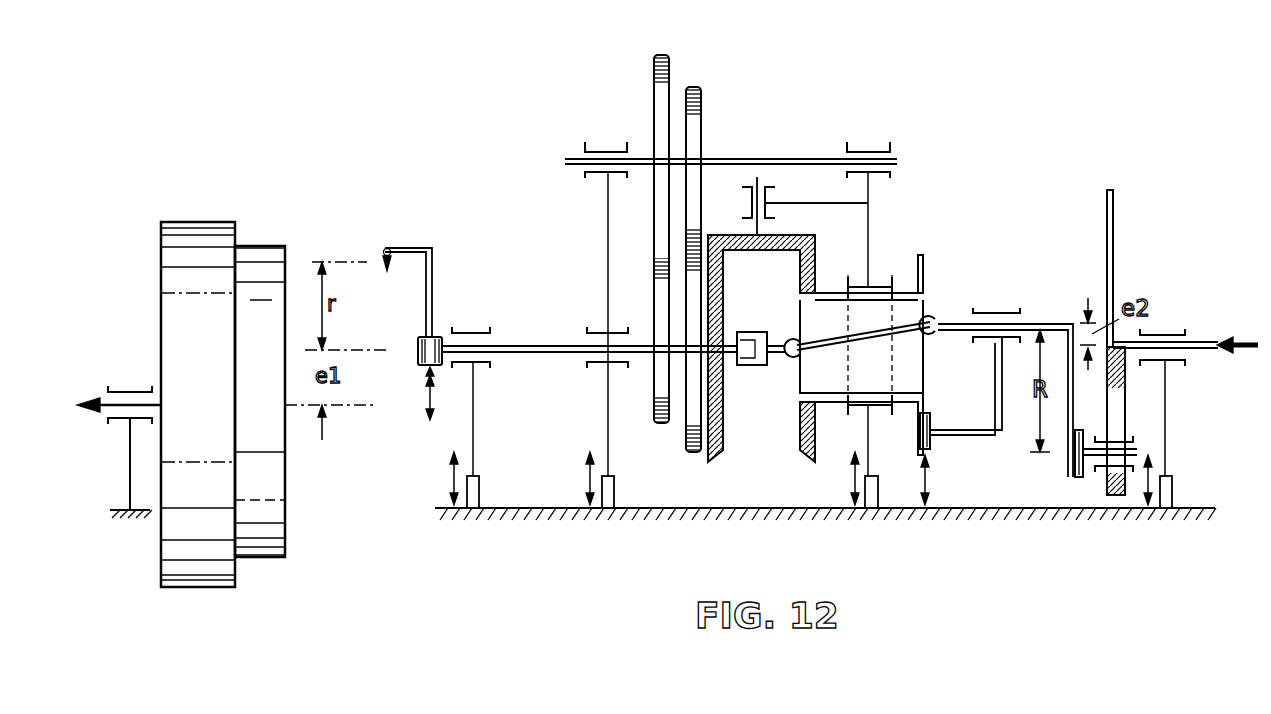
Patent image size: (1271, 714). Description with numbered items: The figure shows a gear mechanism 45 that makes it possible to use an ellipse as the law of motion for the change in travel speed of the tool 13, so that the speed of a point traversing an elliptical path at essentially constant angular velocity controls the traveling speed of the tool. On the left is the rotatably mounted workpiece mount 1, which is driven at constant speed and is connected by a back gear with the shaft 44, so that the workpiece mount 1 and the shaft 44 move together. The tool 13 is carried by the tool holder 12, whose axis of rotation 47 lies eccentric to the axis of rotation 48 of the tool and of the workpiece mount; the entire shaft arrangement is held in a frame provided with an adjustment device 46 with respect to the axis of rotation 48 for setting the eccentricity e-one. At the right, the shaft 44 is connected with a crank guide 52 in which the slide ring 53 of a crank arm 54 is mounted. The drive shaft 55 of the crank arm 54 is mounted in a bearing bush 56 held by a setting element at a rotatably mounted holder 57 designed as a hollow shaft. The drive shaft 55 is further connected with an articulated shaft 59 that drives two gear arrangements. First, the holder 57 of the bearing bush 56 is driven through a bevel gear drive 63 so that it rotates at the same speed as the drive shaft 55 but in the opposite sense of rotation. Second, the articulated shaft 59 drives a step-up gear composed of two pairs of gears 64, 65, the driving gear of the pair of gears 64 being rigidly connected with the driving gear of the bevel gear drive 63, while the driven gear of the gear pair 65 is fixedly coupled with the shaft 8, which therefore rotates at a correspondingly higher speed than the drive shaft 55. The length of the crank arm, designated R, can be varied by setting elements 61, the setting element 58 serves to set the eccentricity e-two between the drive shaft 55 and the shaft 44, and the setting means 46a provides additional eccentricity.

The workpiece mount 1 is at (221, 226).
The tool 13 is at (382, 256).
The tool holder 12 is at (432, 290).
The axis of rotation of tool holder 47 is at (373, 350).
The axis of rotation 48 is at (361, 408).
The shaft 8 is at (527, 345).
The adjustment device 46 is at (480, 490).
The setting means 46a is at (1173, 491).
The gear mechanism 45 is at (666, 242).
The pair of gears 64 is at (691, 120).
The pair of gears 65 is at (664, 292).
The bevel gear drive 63 is at (798, 263).
The holder 57 is at (925, 265).
The articulated shaft 59 is at (862, 339).
The setting element 58 is at (935, 418).
The bearing bush 56 is at (1004, 313).
The drive shaft 55 is at (1053, 323).
The crank arm 54 is at (1072, 397).
The setting elements 61 is at (1073, 465).
The slide ring 53 is at (1127, 437).
The crank guide 52 is at (1113, 272).
The shaft 44 is at (1198, 340).